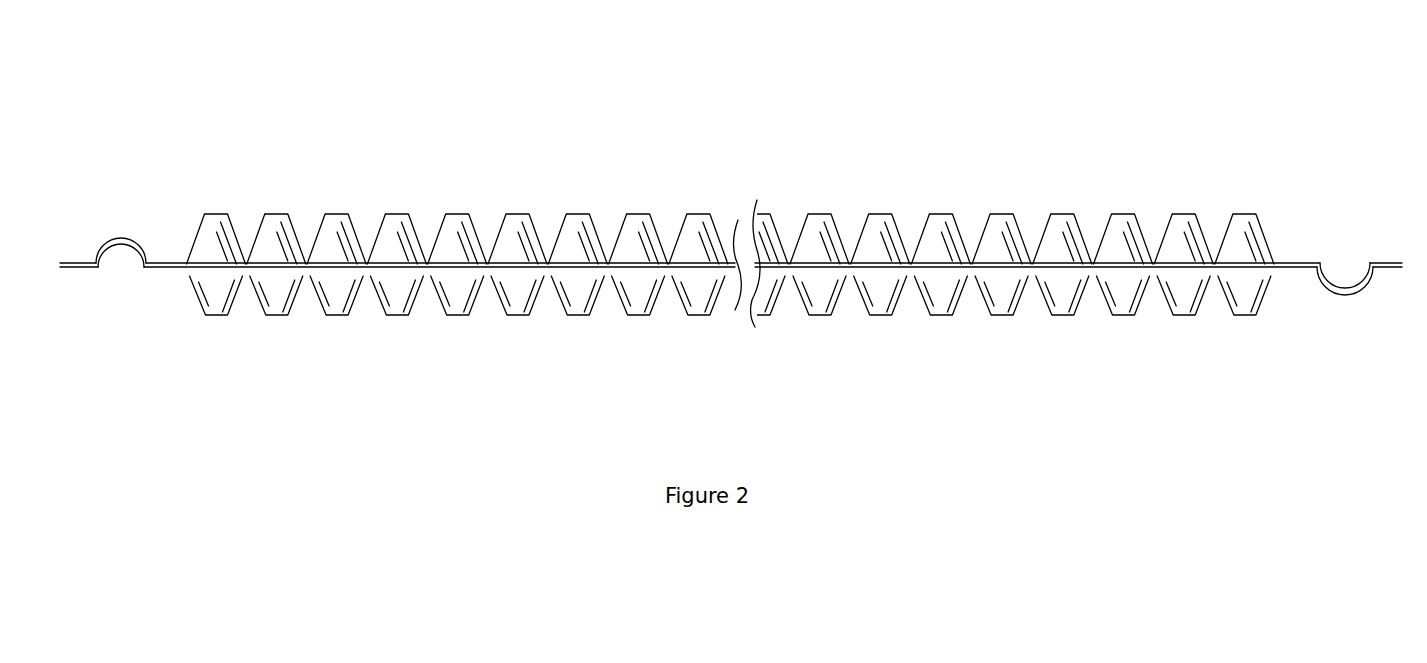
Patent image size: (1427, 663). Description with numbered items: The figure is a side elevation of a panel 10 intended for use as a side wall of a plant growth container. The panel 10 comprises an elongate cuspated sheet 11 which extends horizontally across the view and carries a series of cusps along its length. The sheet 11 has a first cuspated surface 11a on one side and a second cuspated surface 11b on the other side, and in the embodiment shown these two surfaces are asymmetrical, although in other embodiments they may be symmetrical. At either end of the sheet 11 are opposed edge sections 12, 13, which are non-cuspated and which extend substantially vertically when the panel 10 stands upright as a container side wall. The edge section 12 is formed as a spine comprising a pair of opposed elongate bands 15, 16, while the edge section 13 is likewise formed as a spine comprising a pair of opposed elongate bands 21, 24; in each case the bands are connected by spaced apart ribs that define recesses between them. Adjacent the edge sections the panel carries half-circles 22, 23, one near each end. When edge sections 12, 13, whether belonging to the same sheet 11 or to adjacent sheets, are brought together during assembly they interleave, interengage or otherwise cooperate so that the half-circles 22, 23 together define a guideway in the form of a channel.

The panel 10 is at (1020, 145).
The elongate cuspated sheet 11 is at (730, 263).
The first cuspated surface 11a is at (880, 207).
The second cuspated surface 11b is at (823, 320).
The edge section 12 is at (72, 262).
The edge section 13 is at (1370, 258).
The elongate band 15 is at (72, 268).
The elongate band 16 is at (157, 267).
The elongate band 21 is at (1397, 268).
The half-circle 22 is at (120, 243).
The half-circle 23 is at (1348, 292).
The elongate band 24 is at (1305, 268).